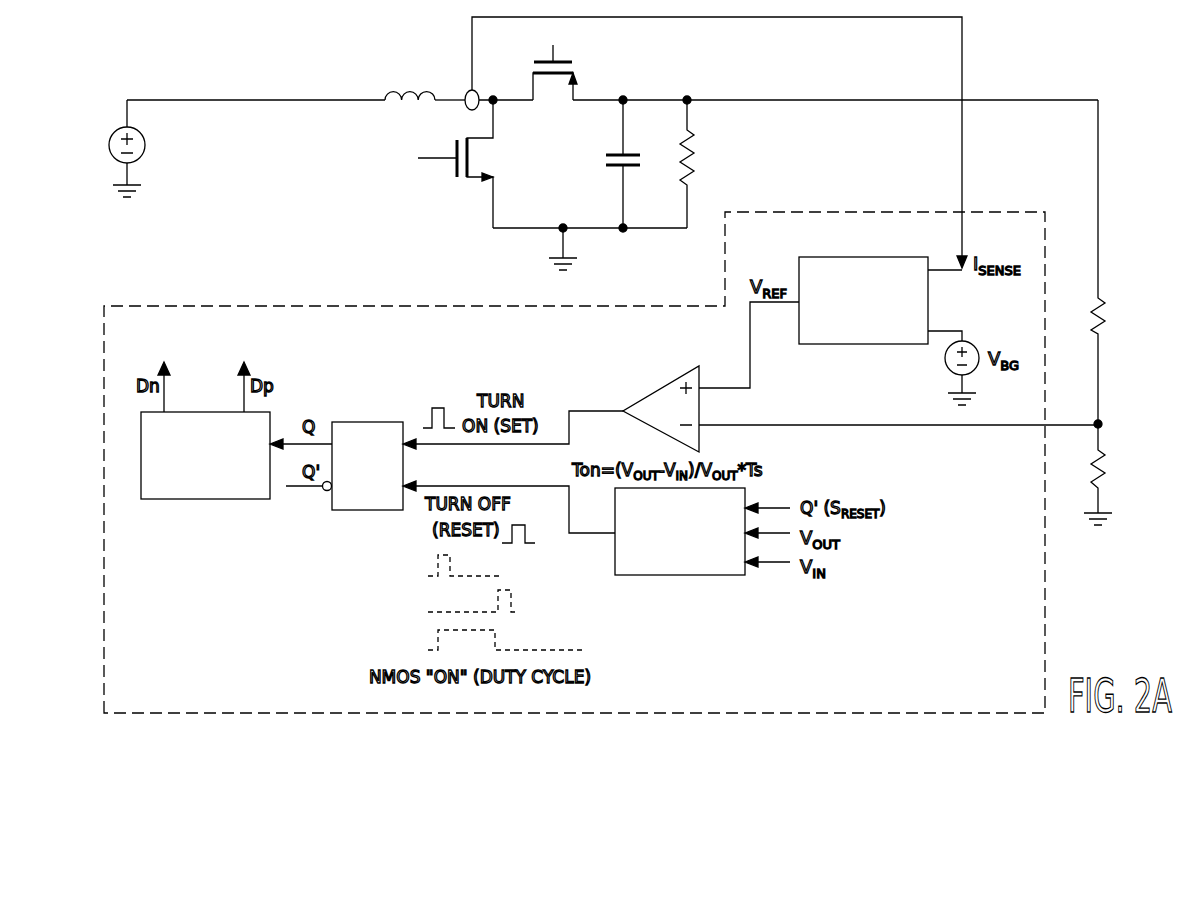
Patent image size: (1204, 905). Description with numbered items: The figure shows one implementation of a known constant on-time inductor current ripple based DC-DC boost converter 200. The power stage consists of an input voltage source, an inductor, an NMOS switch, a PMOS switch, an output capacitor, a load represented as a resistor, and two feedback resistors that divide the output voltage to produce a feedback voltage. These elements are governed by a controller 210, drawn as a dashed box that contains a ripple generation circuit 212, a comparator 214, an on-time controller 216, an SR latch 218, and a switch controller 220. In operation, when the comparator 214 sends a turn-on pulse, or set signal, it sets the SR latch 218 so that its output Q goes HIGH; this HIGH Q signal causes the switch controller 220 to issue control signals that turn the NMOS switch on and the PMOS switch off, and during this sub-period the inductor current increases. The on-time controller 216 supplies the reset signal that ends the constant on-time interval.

The boost converter 200 is at (1131, 64).
The controller 210 is at (1043, 577).
The ripple generation circuit 212 is at (884, 345).
The comparator 214 is at (662, 387).
The on-time controller 216 is at (693, 575).
The SR latch 218 is at (368, 422).
The switch controller 220 is at (205, 499).